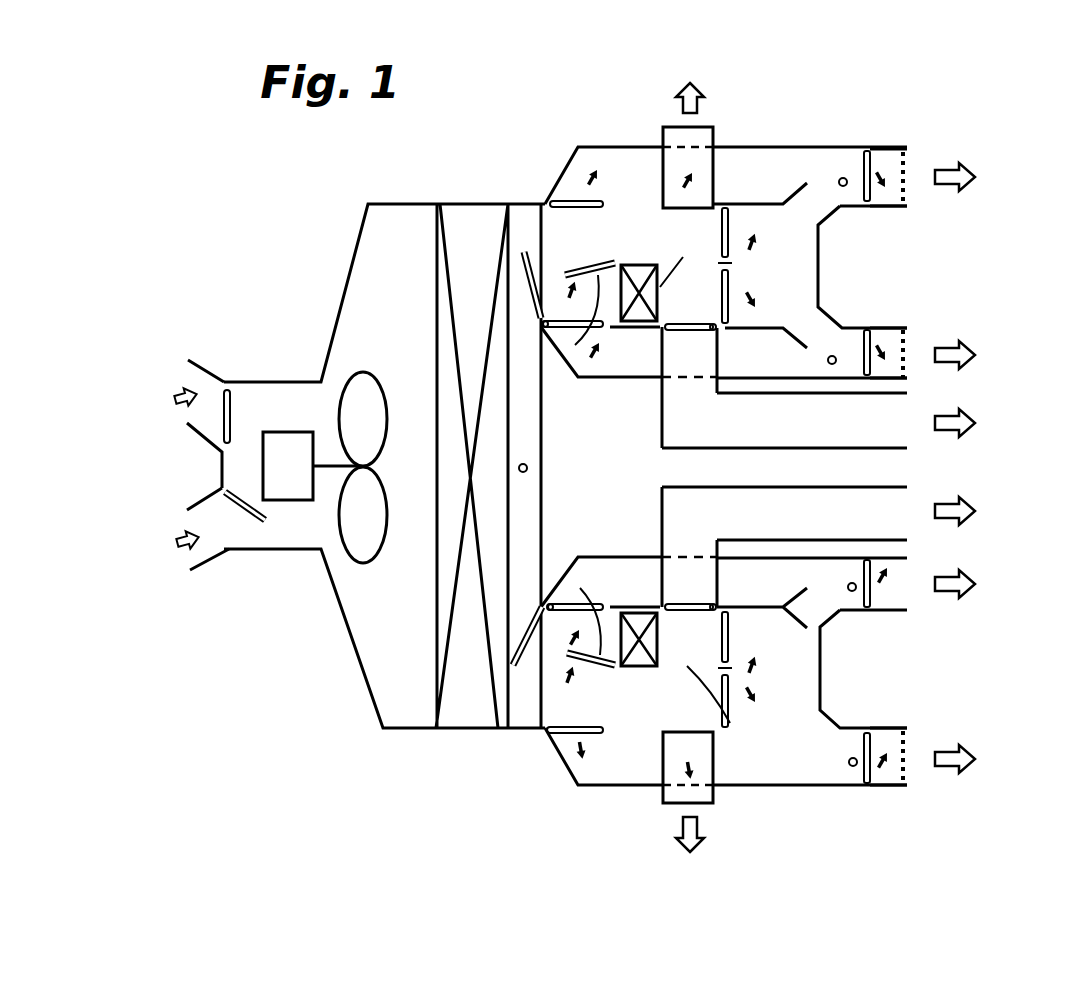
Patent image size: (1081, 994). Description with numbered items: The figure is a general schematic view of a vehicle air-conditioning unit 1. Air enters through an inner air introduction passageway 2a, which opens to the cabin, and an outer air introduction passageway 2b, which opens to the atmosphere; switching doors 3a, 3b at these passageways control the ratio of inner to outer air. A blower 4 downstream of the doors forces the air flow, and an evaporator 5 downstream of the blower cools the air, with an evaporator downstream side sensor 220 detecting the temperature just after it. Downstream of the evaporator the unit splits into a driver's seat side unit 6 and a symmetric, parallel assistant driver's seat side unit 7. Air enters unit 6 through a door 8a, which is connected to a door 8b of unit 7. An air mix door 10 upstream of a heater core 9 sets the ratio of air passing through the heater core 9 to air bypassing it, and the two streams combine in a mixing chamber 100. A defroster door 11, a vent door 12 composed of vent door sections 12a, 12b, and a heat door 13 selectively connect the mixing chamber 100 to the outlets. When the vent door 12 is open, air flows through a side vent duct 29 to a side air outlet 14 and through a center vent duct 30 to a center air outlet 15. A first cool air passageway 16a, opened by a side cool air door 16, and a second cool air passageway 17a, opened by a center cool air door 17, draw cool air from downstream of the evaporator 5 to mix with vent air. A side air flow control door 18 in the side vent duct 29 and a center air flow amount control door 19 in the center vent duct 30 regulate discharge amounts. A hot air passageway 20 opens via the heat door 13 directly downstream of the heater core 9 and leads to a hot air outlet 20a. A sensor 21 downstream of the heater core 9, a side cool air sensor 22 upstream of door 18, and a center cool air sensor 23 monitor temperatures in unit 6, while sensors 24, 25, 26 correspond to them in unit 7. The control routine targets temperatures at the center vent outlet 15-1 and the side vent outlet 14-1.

The air-conditioning unit 1 is at (383, 730).
The inner air introduction passageway 2a is at (200, 367).
The outer air introduction passageway 2b is at (203, 563).
The switching door 3a is at (235, 397).
The switching door 3b is at (252, 525).
The blower 4 is at (297, 500).
The evaporator 5 is at (467, 728).
The driver's seat side unit 6 is at (1028, 136).
The assistant driver's seat side unit 7 is at (1028, 492).
The door 8a is at (532, 247).
The door 8b is at (513, 668).
The heater core 9 is at (630, 262).
The air mix door 10 is at (568, 280).
The defroster door 11 is at (712, 185).
The vent door 12 is at (763, 53).
The vent door section 12a is at (727, 230).
The vent door section 12b is at (730, 300).
The heat door 13 is at (662, 440).
The side air outlet 14 is at (905, 185).
The side vent outlet 14-1 is at (910, 763).
The center air outlet 15 is at (905, 355).
The center vent outlet 15-1 is at (907, 592).
The side cool air door 16 is at (572, 203).
The first cool air passageway 16a is at (642, 147).
The center cool air door 17 is at (545, 340).
The second cool air passageway 17a is at (637, 365).
The side air flow control door 18 is at (866, 150).
The center air flow amount control door 19 is at (866, 328).
The hot air passageway 20 is at (885, 422).
The hot air outlet 20a is at (920, 497).
The sensor 21 is at (640, 360).
The side cool air sensor 22 is at (843, 178).
The center cool air sensor 23 is at (832, 356).
The sensor 24 is at (733, 717).
The sensor 25 is at (852, 591).
The sensor 26 is at (853, 766).
The side vent duct 29 is at (905, 150).
The center vent duct 30 is at (905, 330).
The mixing chamber 100 is at (685, 230).
The evaporator downstream side sensor 220 is at (527, 468).